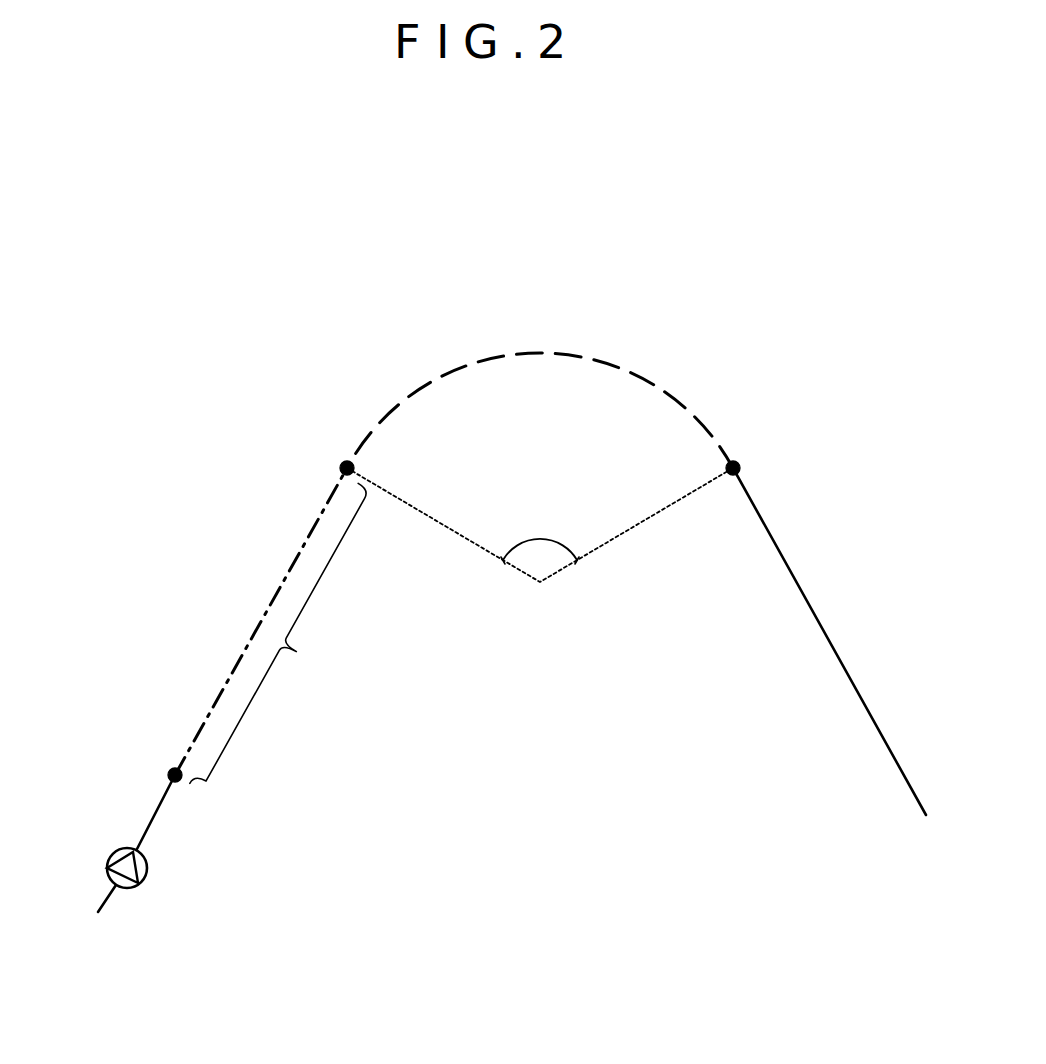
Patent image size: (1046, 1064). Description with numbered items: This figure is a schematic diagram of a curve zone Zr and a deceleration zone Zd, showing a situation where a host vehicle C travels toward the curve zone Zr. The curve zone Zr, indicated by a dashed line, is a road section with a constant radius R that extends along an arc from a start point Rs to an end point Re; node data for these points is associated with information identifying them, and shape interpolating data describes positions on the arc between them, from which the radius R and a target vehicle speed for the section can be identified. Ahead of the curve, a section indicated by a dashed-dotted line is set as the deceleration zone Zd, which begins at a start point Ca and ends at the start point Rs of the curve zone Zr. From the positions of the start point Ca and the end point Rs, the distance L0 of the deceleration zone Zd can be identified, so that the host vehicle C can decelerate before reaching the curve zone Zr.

The curve zone Zr is at (679, 367).
The start point of the curve zone Rs is at (323, 454).
The end point of the curve zone Re is at (826, 626).
The constant radius of the curve zone R is at (540, 525).
The deceleration zone Zd is at (194, 683).
The distance of the deceleration zone L0 is at (287, 640).
The start point of the deceleration zone Ca is at (149, 762).
The host vehicle C is at (122, 843).